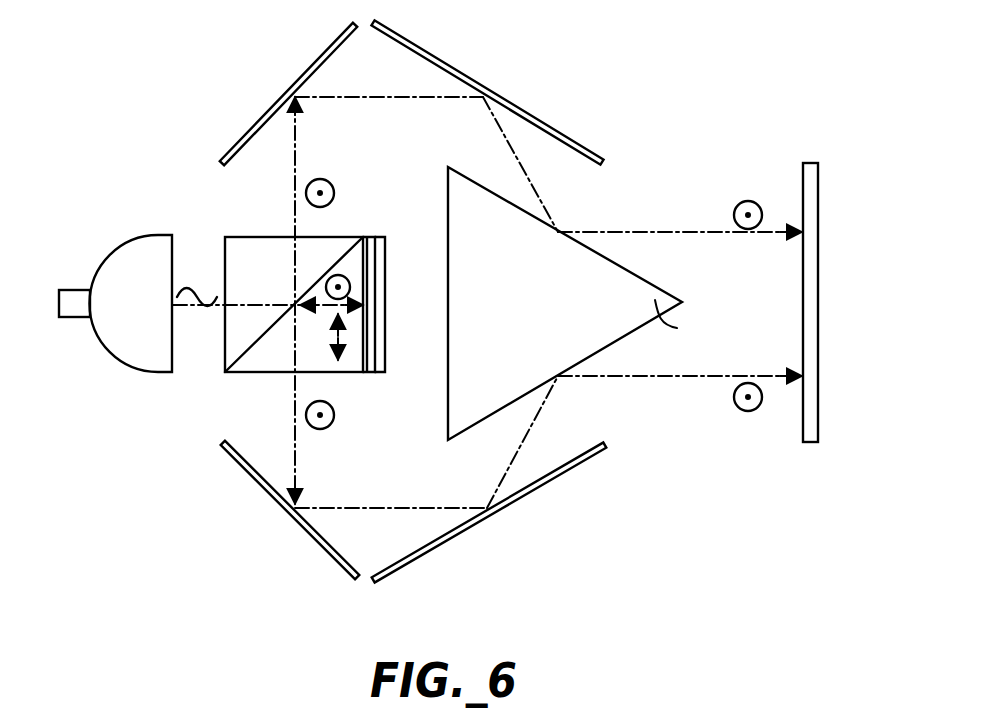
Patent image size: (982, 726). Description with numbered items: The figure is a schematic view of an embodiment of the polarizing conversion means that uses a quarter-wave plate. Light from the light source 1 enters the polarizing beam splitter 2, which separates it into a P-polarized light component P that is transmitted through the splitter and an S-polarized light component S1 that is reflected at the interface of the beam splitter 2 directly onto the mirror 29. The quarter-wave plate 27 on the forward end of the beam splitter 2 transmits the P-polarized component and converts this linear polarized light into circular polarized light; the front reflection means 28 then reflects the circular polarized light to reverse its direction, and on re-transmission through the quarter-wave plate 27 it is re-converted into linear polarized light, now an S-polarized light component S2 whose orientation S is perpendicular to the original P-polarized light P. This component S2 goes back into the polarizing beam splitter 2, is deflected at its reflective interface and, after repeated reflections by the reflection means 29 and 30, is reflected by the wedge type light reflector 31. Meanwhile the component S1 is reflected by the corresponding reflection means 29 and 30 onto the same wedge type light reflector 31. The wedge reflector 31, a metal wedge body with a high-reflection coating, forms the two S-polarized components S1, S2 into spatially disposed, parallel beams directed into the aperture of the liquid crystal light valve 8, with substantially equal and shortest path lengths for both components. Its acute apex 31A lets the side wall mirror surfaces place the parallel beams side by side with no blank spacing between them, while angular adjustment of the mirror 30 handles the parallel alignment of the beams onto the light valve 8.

The light source 1 is at (118, 360).
The polarizing beam splitter 2 is at (222, 357).
The λ/4 plate 27 is at (370, 237).
The front reflection means 28 is at (380, 237).
The reflection means (mirror) 29 is at (272, 100).
The reflection means (mirror) 30 is at (592, 148).
The wedge type light reflector 31 is at (638, 273).
The acute apex 31A is at (687, 322).
The liquid crystal light valve 8 is at (808, 442).
The S-polarized light component S1 is at (318, 178).
The S-polarized light component S2 is at (330, 426).
The S-polarized light S is at (350, 283).
The P-polarized light P is at (342, 337).